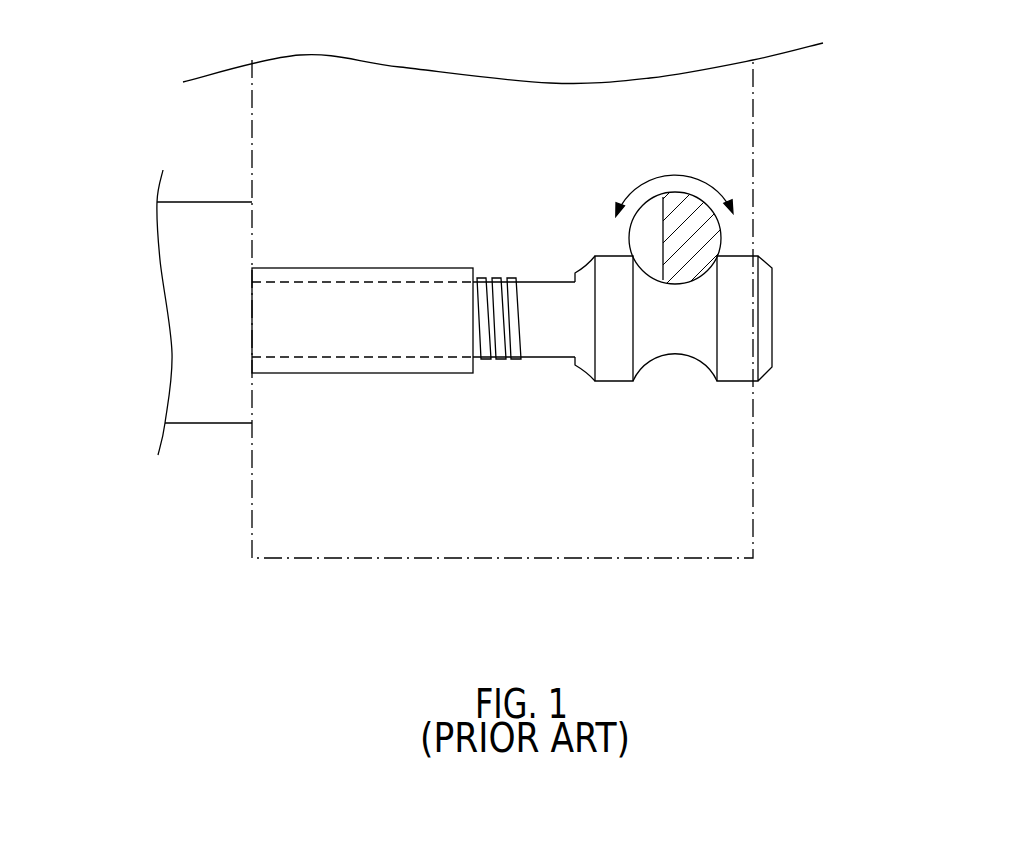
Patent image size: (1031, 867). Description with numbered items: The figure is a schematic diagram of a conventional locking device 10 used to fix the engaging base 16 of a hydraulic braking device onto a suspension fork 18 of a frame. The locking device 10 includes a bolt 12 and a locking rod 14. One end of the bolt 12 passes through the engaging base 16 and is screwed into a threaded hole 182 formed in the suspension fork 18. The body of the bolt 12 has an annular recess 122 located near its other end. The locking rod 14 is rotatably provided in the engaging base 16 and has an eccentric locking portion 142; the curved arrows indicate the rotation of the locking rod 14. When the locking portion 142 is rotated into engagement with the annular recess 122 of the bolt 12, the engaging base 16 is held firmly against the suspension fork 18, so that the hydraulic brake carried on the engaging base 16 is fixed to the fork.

The locking device 10 is at (920, 133).
The bolt 12 is at (771, 263).
The annular recess 122 is at (675, 353).
The locking rod 14 is at (723, 233).
The eccentric locking portion 142 is at (688, 252).
The engaging base 16 is at (755, 117).
The suspension fork 18 is at (213, 200).
The threaded hole 182 is at (345, 355).